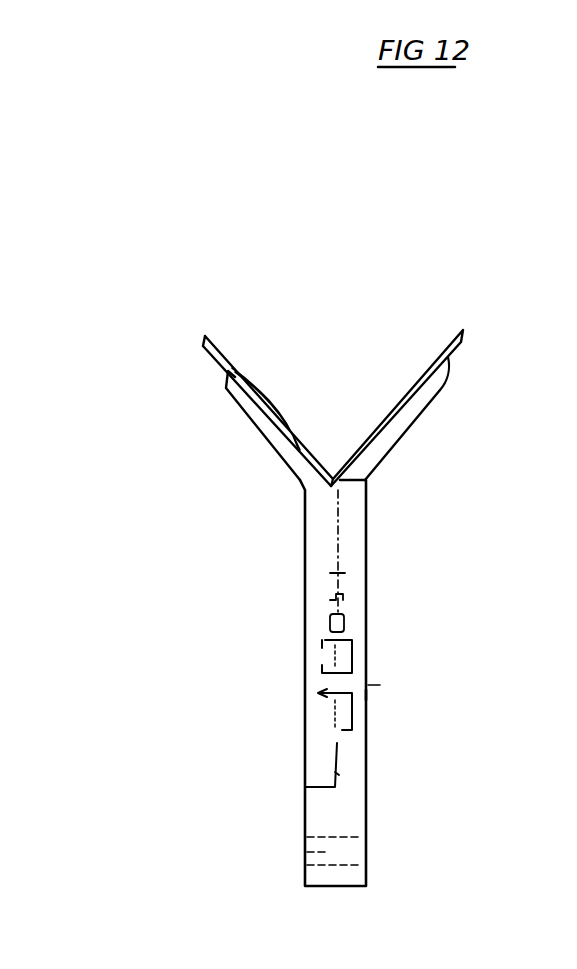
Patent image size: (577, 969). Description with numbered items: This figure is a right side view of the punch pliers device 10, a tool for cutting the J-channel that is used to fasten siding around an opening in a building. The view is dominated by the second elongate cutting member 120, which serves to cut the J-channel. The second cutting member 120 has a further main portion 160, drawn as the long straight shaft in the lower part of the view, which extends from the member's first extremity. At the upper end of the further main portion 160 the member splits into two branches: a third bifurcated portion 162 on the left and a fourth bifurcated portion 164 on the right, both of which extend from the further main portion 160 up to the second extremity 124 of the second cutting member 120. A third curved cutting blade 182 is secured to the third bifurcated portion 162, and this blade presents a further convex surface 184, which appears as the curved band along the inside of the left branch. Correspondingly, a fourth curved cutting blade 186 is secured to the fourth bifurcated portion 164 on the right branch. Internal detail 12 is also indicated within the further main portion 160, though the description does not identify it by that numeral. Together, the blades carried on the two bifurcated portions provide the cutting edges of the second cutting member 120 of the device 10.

The device 10 is at (424, 251).
The internal circuit 12 is at (313, 678).
The second elongate cutting member 120 is at (416, 677).
The second extremity 124 is at (452, 357).
The further main portion 160 is at (358, 608).
The third bifurcated portion 162 is at (245, 404).
The fourth bifurcated portion 164 is at (430, 392).
The third curved cutting blade 182 is at (221, 349).
The further convex surface 184 is at (283, 393).
The fourth curved cutting blade 186 is at (438, 362).